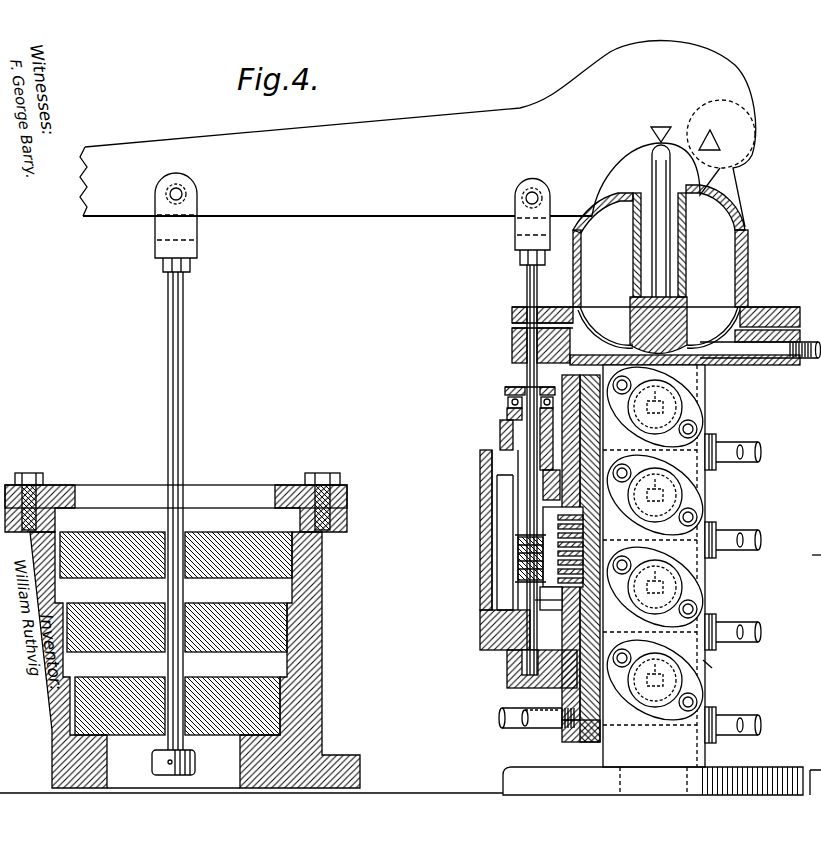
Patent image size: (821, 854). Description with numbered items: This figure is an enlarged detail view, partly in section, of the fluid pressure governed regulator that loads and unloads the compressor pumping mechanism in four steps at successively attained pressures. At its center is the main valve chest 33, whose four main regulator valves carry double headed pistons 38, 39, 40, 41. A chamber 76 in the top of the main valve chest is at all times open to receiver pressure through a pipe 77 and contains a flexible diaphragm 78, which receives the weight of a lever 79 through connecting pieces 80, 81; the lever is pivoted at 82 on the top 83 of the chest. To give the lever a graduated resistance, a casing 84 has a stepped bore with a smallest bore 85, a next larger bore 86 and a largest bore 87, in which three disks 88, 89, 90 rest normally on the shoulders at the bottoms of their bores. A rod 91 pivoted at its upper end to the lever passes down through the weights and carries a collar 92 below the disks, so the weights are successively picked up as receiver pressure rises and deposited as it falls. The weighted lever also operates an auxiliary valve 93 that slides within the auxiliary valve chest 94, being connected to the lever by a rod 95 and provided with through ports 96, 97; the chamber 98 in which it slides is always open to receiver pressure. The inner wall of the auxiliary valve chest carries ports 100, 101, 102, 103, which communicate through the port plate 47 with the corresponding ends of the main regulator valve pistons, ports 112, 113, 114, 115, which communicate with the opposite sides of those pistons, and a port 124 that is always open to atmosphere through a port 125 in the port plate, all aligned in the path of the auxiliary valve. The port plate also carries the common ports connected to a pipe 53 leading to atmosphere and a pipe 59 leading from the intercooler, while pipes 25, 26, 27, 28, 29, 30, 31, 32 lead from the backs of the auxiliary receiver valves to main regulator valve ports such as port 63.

The lever 79 is at (418, 156).
The connecting piece 80 is at (652, 178).
The connecting piece 81 is at (633, 245).
The pivot 82 is at (706, 137).
The top of main valve chest 83 is at (748, 262).
The flexible diaphragm 78 is at (632, 305).
The chamber 76 is at (656, 336).
The pipe 77 is at (808, 348).
The double headed piston 41 is at (682, 396).
The double headed piston 40 is at (672, 490).
The double headed piston 39 is at (672, 584).
The double headed piston 38 is at (672, 681).
The main valve chest 33 is at (719, 667).
The pipe 30 is at (716, 442).
The pipe 32 is at (718, 535).
The pipe 29 is at (718, 627).
The pipe 31 is at (718, 722).
The pipe 27 is at (752, 447).
The pipe 25 is at (752, 536).
The pipe 28 is at (752, 628).
The pipe 26 is at (752, 723).
The main regulator valve port 63 is at (813, 563).
The pipe 59 is at (500, 714).
The pipe 53 is at (533, 722).
The port plate 47 is at (590, 742).
The auxiliary valve 93 is at (500, 622).
The auxiliary valve chest 94 is at (507, 659).
The rod 95 is at (527, 366).
The through port 96 is at (558, 540).
The through port 97 is at (548, 610).
The chamber 98 is at (513, 452).
The port 100 is at (547, 535).
The port 101 is at (548, 520).
The port 102 is at (545, 505).
The port 103 is at (530, 478).
The port 112 is at (540, 593).
The port 113 is at (540, 582).
The port 114 is at (535, 575).
The port 115 is at (530, 565).
The port 124 is at (540, 548).
The port 125 is at (568, 545).
The casing 84 is at (322, 634).
The smallest bore 85 is at (232, 695).
The next larger bore 86 is at (236, 617).
The largest bore 87 is at (238, 544).
The disk 88 is at (120, 695).
The disk 89 is at (116, 617).
The disk 90 is at (112, 544).
The rod 91 is at (183, 419).
The collar 92 is at (195, 761).